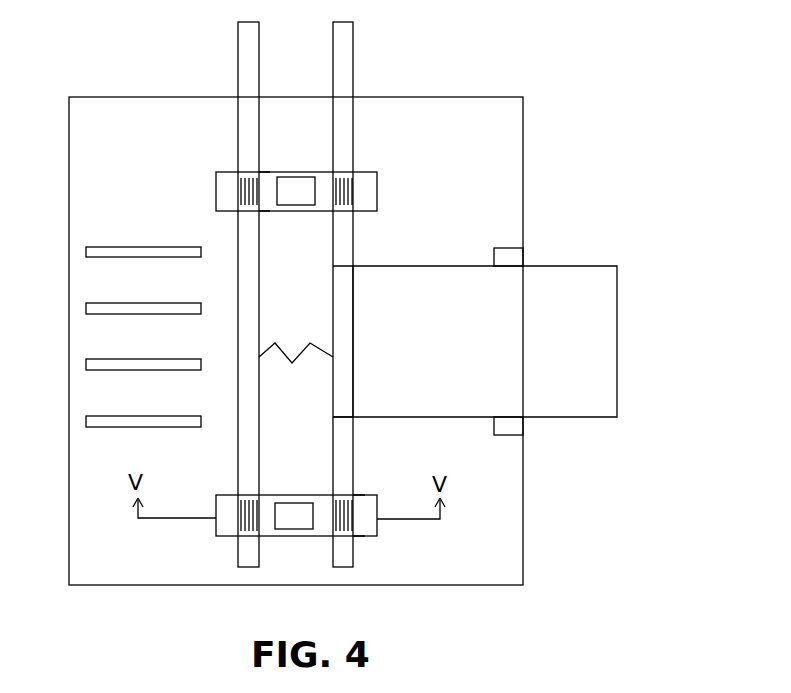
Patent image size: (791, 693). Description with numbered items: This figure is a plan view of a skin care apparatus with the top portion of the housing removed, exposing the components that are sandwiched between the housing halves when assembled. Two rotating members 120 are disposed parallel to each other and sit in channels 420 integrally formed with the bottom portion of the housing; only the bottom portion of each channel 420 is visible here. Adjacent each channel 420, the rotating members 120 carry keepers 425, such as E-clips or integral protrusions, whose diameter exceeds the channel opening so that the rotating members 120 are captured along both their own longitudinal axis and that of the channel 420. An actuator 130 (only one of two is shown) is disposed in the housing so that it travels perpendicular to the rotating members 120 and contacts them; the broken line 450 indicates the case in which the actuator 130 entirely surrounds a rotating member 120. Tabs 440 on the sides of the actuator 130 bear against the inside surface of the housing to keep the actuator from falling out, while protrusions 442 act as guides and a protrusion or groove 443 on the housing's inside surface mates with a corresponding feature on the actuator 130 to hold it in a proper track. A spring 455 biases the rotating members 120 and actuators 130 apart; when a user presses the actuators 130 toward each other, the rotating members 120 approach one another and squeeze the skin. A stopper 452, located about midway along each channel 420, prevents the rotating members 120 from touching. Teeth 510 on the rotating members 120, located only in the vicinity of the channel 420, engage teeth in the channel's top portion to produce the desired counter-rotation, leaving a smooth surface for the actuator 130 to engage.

The rotating member 120 is at (238, 62).
The actuator 130 is at (560, 266).
The channel 420 is at (377, 191).
The keeper 425 is at (270, 169).
The tab 440 is at (494, 262).
The protrusion 442 is at (100, 247).
The protrusion (or groove) 443 is at (110, 303).
The broken line 450 is at (340, 415).
The stopper 452 is at (298, 206).
The spring 455 is at (288, 350).
The teeth 510 is at (240, 192).